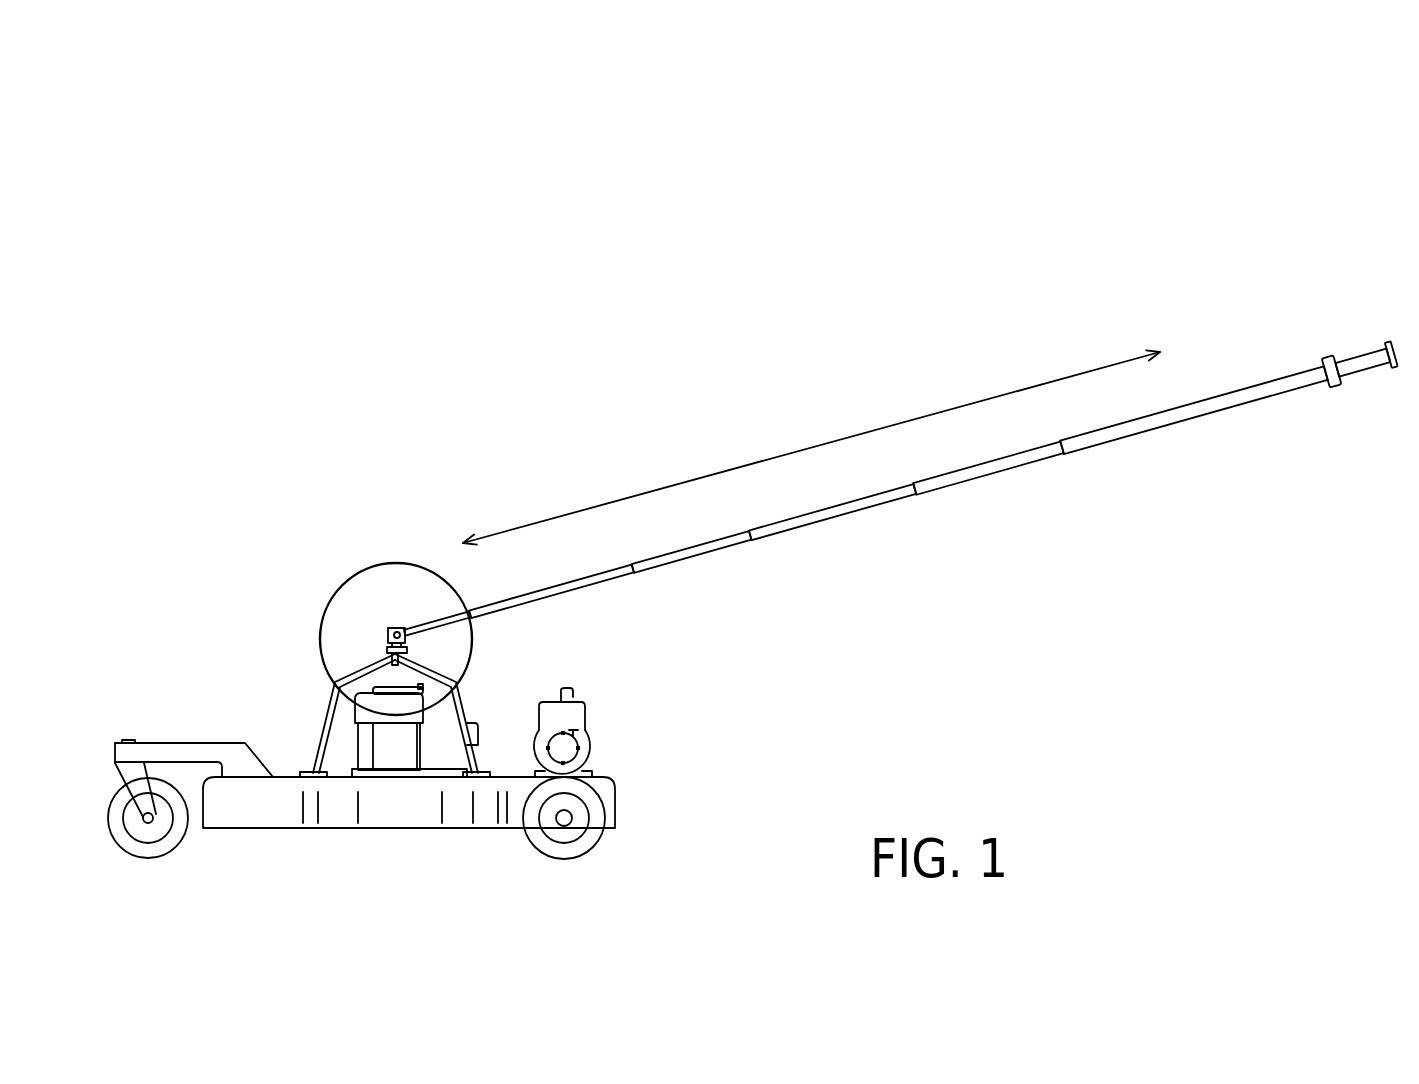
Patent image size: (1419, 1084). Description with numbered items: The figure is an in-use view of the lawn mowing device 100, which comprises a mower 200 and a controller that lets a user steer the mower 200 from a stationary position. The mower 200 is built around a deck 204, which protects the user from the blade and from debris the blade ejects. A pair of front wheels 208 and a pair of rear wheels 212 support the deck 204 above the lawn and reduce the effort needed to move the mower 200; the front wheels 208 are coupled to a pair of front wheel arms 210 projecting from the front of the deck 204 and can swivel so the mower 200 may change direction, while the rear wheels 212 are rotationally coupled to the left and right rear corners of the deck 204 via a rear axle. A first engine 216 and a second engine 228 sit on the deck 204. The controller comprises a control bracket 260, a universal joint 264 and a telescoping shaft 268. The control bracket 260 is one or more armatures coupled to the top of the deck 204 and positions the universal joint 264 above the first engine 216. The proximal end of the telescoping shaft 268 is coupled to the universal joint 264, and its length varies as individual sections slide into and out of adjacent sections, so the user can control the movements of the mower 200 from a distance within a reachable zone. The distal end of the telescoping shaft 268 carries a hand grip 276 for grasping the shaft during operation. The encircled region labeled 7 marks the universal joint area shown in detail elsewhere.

The lawn mowing device 100 is at (268, 139).
The mower 200 is at (609, 900).
The deck 204 is at (615, 780).
The pair of front wheels 208 is at (127, 845).
The pair of front wheel arms 210 is at (180, 745).
The pair of rear wheels 212 is at (582, 845).
The first engine 216 is at (443, 745).
The second engine 228 is at (565, 710).
The control bracket 260 is at (333, 712).
The universal joint 264 is at (396, 628).
The telescoping shaft 268 is at (1363, 248).
The hand grip 276 is at (1365, 373).
The detail view indicator 7 is at (345, 582).